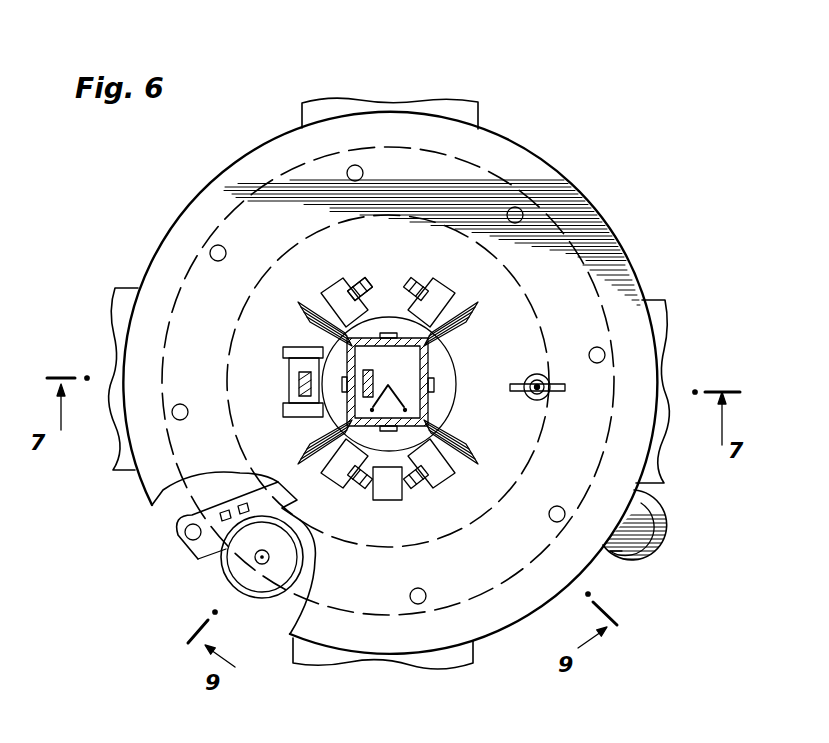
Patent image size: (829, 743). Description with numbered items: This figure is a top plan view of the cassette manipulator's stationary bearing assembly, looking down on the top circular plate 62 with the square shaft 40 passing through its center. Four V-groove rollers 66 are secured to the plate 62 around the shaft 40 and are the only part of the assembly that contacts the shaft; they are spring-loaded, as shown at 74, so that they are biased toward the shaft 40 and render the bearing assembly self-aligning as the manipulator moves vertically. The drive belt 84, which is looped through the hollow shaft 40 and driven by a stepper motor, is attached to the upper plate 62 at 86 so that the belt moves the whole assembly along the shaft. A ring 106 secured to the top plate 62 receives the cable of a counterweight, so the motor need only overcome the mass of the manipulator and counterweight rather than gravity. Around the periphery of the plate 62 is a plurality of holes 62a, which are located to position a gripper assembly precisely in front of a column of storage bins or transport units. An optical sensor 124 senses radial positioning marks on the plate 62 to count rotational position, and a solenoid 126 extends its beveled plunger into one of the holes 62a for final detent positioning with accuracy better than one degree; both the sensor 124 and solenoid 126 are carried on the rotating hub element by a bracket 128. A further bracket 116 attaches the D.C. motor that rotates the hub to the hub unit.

The square shaft 40 is at (430, 419).
The top circular plate 62 is at (226, 168).
The holes 62a is at (360, 166).
The V-groove rollers 66 is at (298, 305).
The spring loading 74 is at (354, 280).
The belt 84 is at (374, 378).
The belt attachment point 86 is at (284, 376).
The ring 106 is at (557, 394).
The bracket 116 is at (664, 515).
The optical sensor 124 is at (184, 530).
The solenoid 126 is at (255, 594).
The bracket 128 is at (212, 563).